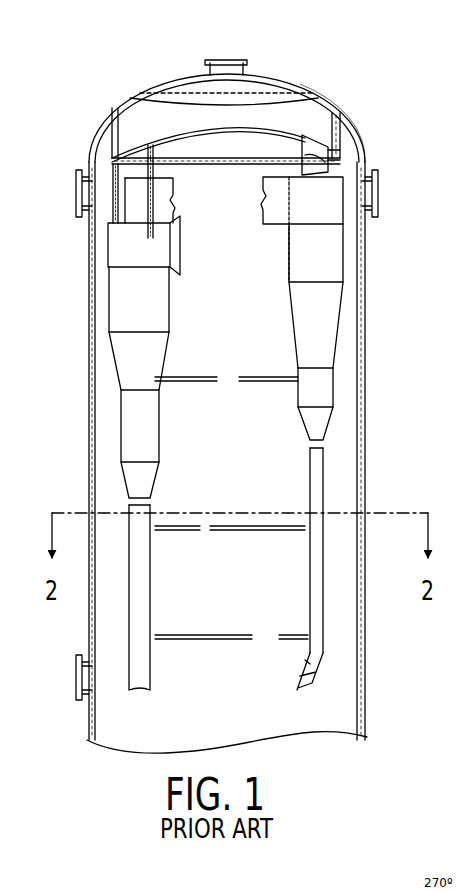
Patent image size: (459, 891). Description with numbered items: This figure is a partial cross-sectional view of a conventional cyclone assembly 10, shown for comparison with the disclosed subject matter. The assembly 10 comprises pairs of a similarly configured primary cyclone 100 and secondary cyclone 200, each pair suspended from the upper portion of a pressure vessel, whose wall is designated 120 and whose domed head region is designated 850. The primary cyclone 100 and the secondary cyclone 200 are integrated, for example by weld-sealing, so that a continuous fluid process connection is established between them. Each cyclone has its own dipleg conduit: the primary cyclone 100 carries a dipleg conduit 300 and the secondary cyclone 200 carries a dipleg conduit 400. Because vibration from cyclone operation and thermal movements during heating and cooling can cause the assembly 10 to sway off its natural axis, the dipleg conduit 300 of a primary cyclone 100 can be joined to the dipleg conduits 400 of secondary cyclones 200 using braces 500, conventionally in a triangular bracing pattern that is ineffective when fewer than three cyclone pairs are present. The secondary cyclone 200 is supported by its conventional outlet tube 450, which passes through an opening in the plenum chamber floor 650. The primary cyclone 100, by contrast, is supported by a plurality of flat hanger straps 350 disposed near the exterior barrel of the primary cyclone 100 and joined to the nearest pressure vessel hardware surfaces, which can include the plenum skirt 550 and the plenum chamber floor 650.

The cyclone assembly 10 is at (104, 73).
The primary cyclone 100 is at (140, 317).
The vessel wall 120 is at (366, 420).
The secondary cyclone 200 is at (317, 305).
The dipleg conduit 300 is at (137, 545).
The flat hanger straps 350 is at (111, 181).
The dipleg conduit 400 is at (317, 503).
The outlet tube 450 is at (315, 124).
The braces 500 is at (256, 521).
The plenum skirt 550 is at (350, 145).
The plenum chamber floor 650 is at (283, 131).
The vessel dome head 850 is at (359, 112).